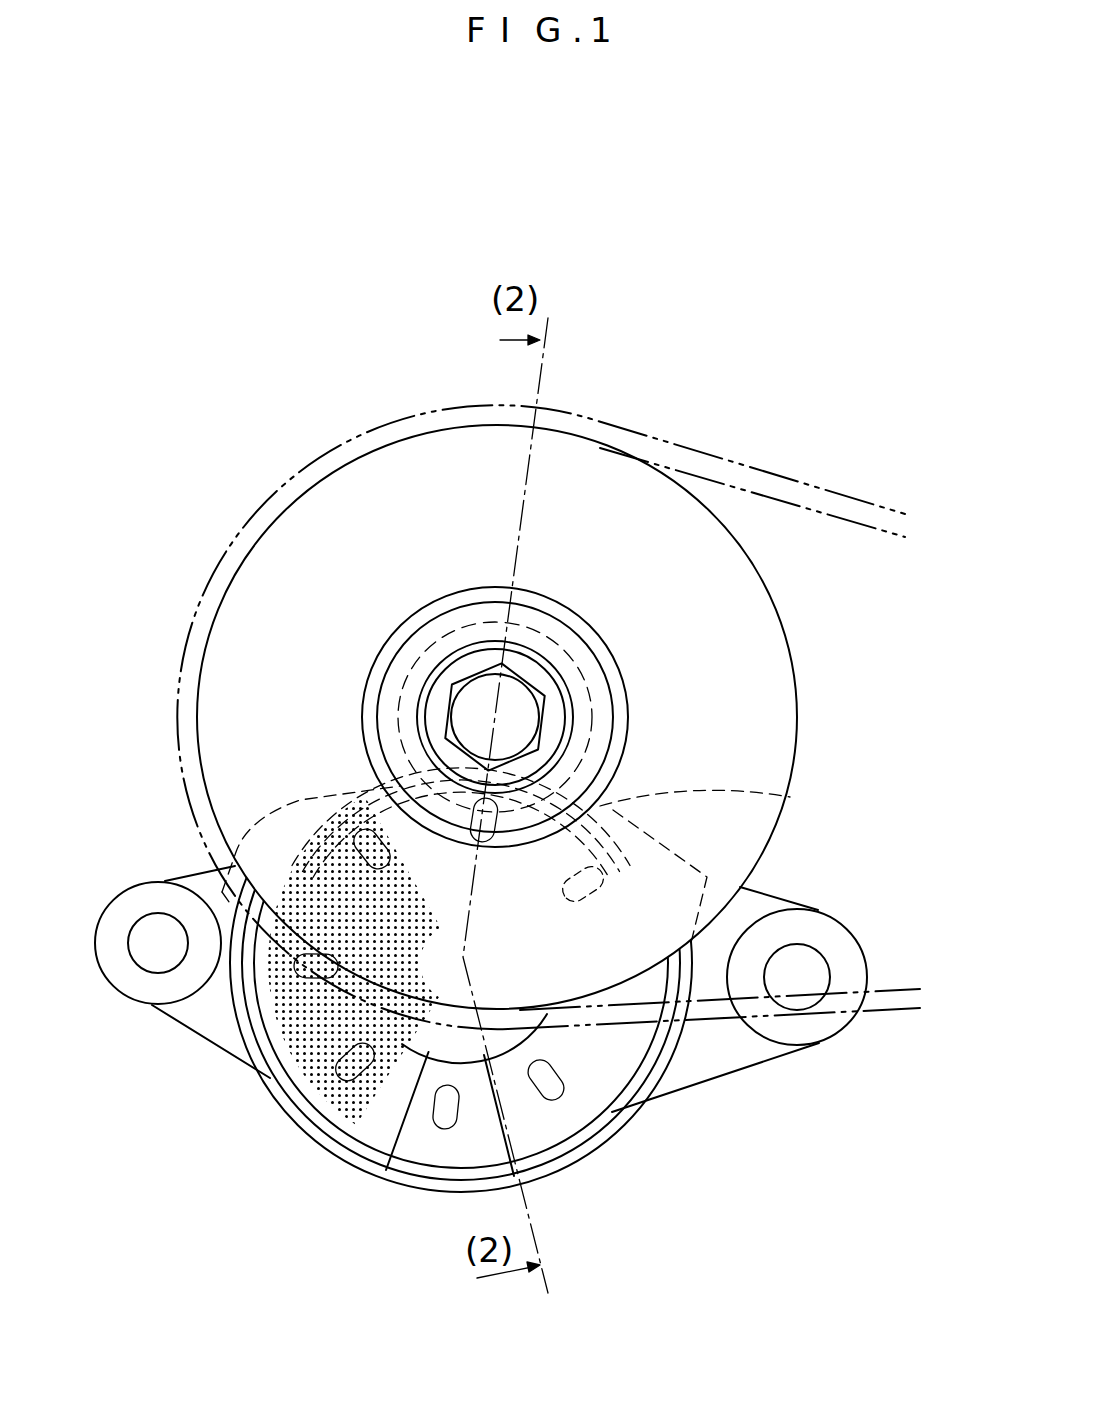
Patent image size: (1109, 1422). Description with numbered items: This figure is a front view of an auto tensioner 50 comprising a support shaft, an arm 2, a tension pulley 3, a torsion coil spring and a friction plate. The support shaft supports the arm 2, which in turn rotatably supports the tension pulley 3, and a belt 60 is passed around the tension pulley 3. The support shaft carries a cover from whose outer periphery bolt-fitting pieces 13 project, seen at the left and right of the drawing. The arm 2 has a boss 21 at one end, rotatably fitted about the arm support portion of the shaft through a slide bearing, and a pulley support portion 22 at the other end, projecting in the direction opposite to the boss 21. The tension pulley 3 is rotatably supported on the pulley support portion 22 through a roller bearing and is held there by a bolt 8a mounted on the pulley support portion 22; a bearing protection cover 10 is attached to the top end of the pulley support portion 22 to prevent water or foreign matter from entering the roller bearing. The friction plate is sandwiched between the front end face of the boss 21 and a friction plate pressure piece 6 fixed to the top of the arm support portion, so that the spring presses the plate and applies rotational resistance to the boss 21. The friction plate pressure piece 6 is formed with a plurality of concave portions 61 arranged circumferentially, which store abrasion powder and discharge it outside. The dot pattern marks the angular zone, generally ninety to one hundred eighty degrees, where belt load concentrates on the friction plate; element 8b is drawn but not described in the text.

The auto tensioner 50 is at (824, 248).
The arm 2 is at (795, 792).
The tension pulley 3 is at (768, 640).
The friction plate pressure piece 6 is at (552, 1135).
The bolt 8a is at (468, 697).
The stopper portion 8b is at (390, 1170).
The bearing protection cover 10 is at (540, 622).
The bolt-fitting pieces 13 is at (200, 1027).
The boss 21 is at (312, 1135).
The pulley support portion 22 is at (575, 663).
The belt 60 is at (665, 452).
The concave portions 61 is at (625, 1138).